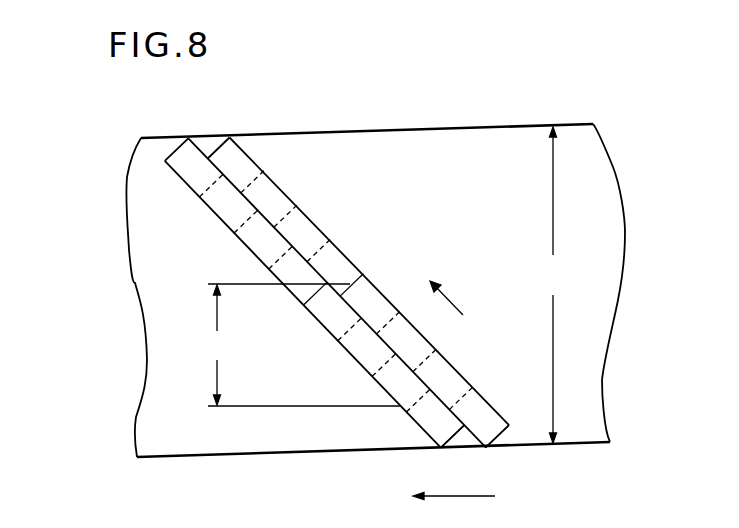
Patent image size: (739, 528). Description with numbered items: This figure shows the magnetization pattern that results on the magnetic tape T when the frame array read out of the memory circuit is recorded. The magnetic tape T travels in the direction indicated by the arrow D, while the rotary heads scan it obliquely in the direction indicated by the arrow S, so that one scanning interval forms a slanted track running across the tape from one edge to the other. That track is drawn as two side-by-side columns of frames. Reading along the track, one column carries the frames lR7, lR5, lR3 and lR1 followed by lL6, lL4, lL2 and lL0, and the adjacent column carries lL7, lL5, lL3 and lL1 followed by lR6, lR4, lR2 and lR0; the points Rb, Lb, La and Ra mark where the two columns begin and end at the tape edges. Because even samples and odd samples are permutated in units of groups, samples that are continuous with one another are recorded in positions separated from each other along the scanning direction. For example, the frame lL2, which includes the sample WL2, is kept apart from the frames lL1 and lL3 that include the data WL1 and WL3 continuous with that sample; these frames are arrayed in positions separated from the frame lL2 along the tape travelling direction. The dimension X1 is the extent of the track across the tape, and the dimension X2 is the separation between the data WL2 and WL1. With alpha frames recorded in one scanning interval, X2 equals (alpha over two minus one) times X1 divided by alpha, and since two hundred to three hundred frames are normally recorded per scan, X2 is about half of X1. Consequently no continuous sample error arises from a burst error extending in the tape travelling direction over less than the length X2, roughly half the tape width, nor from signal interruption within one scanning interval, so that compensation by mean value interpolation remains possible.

The magnetic tape T is at (593, 435).
The beginning of right track segment Rb is at (188, 138).
The beginning of left track segment Lb is at (229, 138).
The end of left track segment La is at (433, 438).
The end of right track segment Ra is at (480, 436).
The scanning direction arrow S is at (438, 287).
The tape travelling direction arrow D is at (443, 497).
The width of the magnetic tape X1 is at (552, 285).
The separation distance X2 is at (303, 345).
The frame lR7 is at (201, 176).
The frame lR5 is at (236, 212).
The frame lR3 is at (270, 248).
The frame lR1 is at (305, 284).
The frame lL6 is at (339, 320).
The frame lL4 is at (374, 355).
The frame lL2 is at (408, 391).
The frame lL0 is at (442, 427).
The frame lL7 is at (243, 173).
The frame lL5 is at (276, 207).
The frame lL3 is at (309, 241).
The frame lL1 is at (342, 276).
The frame lR6 is at (378, 313).
The frame lR4 is at (414, 351).
The frame lR2 is at (451, 389).
The frame lR0 is at (487, 426).